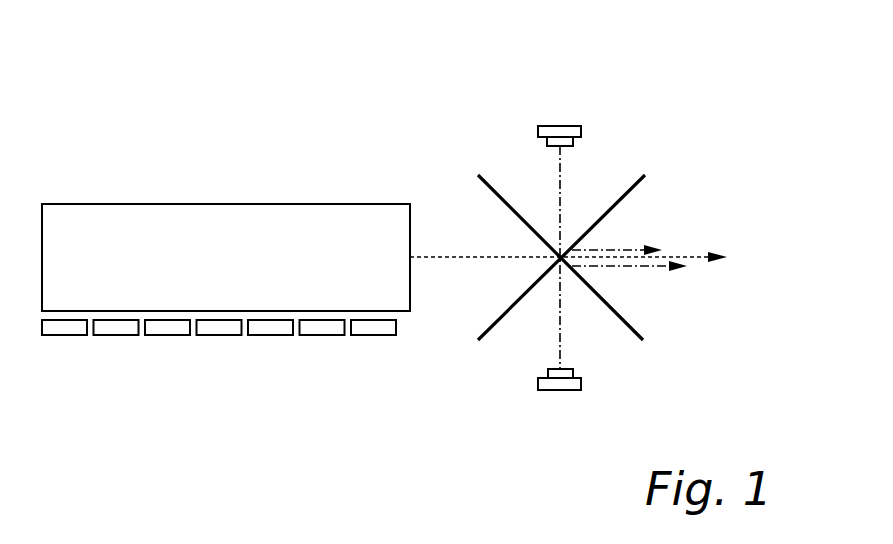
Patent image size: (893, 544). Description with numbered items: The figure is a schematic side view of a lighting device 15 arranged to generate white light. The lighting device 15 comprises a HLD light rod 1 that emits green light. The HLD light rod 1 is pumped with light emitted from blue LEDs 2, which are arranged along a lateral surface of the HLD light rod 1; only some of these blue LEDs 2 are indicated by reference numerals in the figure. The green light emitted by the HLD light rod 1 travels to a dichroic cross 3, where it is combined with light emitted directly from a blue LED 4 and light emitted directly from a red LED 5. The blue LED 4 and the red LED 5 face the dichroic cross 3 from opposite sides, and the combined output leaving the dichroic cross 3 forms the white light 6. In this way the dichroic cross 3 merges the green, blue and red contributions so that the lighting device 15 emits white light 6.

The HLD light rod 1 is at (175, 204).
The blue LEDs 2 is at (63, 335).
The dichroic cross 3 is at (637, 190).
The blue LED 4 is at (575, 141).
The red LED 5 is at (577, 375).
The white light 6 is at (696, 216).
The lighting device 15 is at (506, 84).